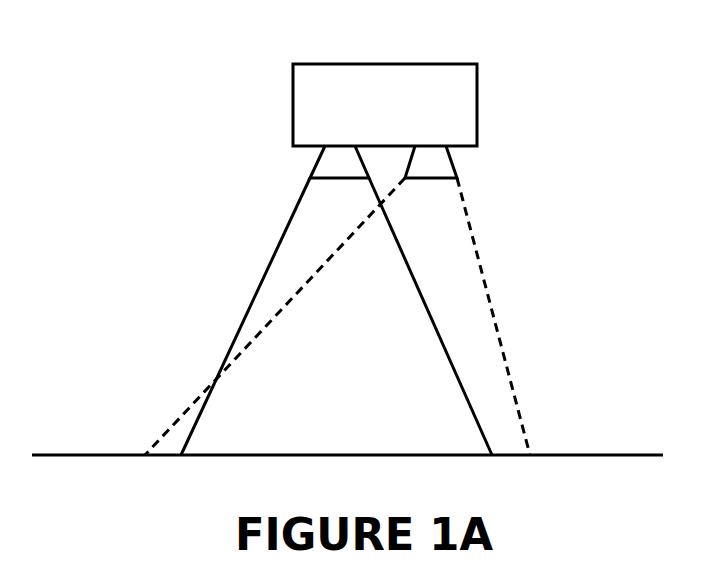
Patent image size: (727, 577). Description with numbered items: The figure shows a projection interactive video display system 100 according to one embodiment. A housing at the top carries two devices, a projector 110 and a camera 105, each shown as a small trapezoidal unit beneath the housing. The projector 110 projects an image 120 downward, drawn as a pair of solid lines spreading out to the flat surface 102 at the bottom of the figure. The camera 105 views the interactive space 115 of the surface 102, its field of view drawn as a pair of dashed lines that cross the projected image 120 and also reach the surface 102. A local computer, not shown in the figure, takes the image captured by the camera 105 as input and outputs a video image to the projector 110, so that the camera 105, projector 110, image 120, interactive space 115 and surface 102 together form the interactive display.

The projection interactive video display system 100 is at (173, 56).
The surface 102 is at (587, 455).
The camera 105 is at (451, 161).
The projector 110 is at (318, 161).
The interactive space 115 is at (487, 293).
The image 120 is at (259, 287).